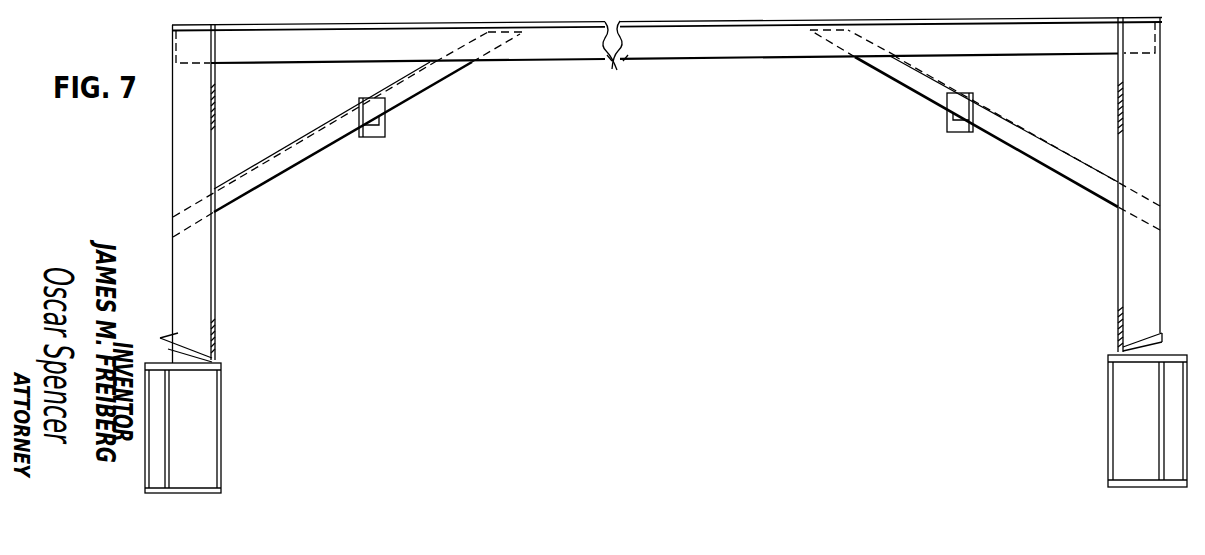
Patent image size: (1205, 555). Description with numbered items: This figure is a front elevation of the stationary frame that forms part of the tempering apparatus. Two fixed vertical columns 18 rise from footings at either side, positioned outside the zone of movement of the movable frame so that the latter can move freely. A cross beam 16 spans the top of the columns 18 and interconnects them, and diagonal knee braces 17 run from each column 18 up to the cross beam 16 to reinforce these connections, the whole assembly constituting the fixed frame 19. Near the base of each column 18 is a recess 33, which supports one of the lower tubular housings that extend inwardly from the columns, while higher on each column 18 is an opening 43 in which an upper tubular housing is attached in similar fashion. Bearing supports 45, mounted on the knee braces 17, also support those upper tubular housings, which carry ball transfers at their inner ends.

The cross beam 16 is at (667, 57).
The knee brace 17 is at (305, 159).
The fixed vertical column 18 is at (1123, 263).
The fixed frame 19 is at (171, 140).
The recess 33 is at (217, 345).
The opening 43 is at (216, 108).
The bearing support 45 is at (358, 106).